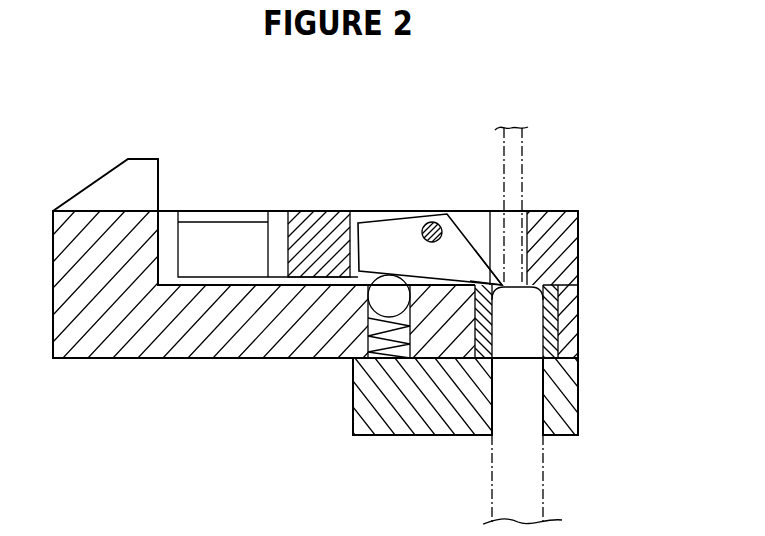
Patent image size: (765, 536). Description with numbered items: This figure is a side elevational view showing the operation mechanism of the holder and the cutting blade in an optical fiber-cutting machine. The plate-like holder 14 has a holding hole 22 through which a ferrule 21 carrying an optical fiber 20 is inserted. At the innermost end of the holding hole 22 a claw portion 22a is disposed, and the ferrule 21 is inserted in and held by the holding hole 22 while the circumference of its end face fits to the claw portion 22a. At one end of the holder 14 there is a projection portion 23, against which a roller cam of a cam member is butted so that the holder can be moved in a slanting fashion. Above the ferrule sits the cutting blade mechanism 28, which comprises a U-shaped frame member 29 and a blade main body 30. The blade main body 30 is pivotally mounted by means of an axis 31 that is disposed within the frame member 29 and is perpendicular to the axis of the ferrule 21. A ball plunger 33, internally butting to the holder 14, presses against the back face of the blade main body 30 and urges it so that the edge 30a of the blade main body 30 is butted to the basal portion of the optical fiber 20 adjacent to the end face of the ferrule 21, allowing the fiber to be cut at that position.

The holder 14 is at (240, 358).
The optical fiber 20 is at (522, 147).
The ferrule 21 is at (543, 473).
The holding hole 22 is at (543, 400).
The claw portion 22a is at (549, 282).
The projection portion 23 is at (127, 167).
The cutting blade mechanism 28 is at (363, 113).
The frame member 29 is at (320, 211).
The blade main body 30 is at (505, 202).
The edge 30a is at (517, 277).
The axis 31 is at (430, 222).
The ball plunger 33 is at (367, 310).